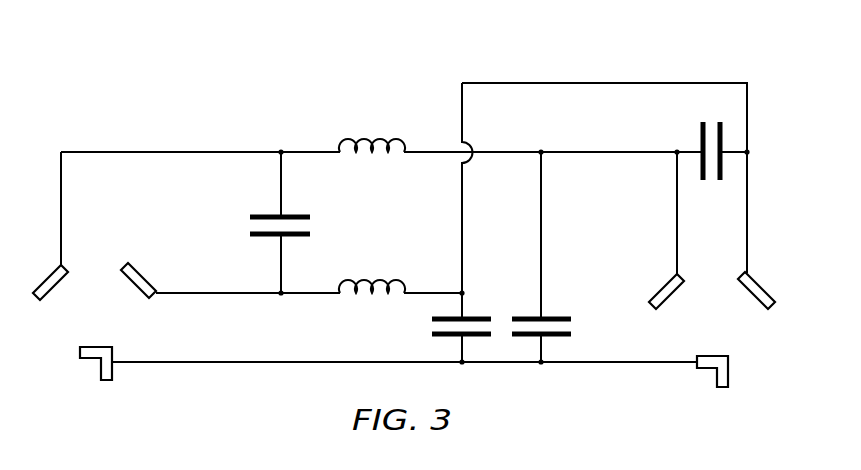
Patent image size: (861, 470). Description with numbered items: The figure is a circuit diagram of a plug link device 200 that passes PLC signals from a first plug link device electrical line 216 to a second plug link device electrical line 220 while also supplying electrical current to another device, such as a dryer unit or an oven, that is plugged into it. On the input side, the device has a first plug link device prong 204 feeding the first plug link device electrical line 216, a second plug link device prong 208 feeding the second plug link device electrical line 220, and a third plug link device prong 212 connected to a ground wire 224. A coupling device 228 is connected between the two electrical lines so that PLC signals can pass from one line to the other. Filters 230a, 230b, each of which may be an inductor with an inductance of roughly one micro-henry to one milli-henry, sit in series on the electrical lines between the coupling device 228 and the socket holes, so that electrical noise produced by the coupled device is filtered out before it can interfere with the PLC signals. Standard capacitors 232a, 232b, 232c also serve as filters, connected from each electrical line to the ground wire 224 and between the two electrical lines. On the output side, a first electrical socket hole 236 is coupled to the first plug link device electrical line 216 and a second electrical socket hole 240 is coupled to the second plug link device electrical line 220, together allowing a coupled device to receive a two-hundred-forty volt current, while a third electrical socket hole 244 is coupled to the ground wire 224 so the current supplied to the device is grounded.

The plug link device 200 is at (228, 67).
The first plug link device prong 204 is at (48, 277).
The second plug link device prong 208 is at (135, 289).
The third plug link device prong 212 is at (92, 361).
The first plug link device electrical line 216 is at (153, 151).
The second plug link device electrical line 220 is at (250, 294).
The ground wire 224 is at (182, 364).
The coupling device 228 is at (267, 213).
The filter 230a is at (362, 134).
The filter 230b is at (362, 275).
The standard capacitor 232a is at (478, 316).
The standard capacitor 232b is at (562, 314).
The standard capacitor 232c is at (700, 136).
The first electrical socket hole 236 is at (662, 286).
The second electrical socket hole 240 is at (753, 297).
The third electrical socket hole 244 is at (733, 367).